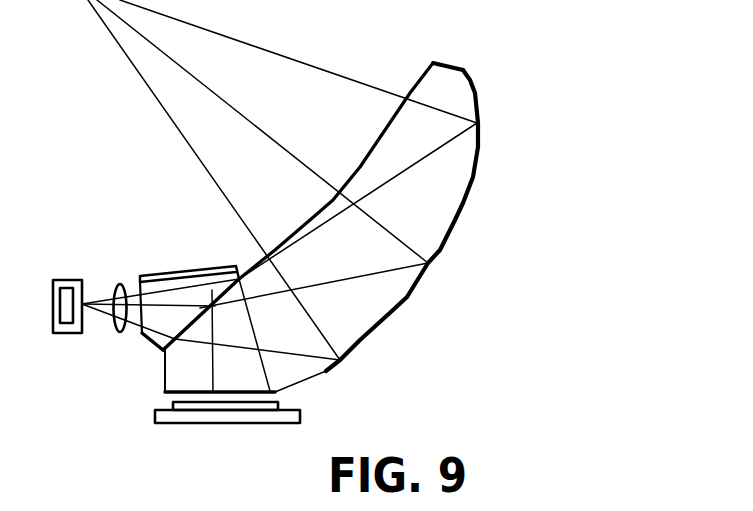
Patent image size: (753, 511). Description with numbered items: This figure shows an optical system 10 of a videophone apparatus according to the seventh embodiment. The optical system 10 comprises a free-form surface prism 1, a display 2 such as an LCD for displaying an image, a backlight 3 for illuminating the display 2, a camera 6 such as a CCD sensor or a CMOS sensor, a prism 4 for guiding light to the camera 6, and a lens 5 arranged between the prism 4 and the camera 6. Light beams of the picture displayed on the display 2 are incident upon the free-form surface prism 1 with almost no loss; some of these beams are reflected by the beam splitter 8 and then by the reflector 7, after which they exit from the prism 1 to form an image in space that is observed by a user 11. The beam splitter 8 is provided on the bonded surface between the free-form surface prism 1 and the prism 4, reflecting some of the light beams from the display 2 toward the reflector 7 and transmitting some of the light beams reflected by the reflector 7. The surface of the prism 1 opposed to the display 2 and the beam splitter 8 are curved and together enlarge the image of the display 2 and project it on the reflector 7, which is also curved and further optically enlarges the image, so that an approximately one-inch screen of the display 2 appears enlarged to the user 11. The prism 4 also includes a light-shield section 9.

The free-form surface prism 1 is at (369, 204).
The display 2 is at (278, 402).
The backlight 3 is at (299, 419).
The prism 4 is at (174, 309).
The lens 5 is at (118, 336).
The camera 6 is at (53, 333).
The reflector 7 is at (407, 297).
The beam splitter 8 is at (188, 337).
The light-shield section 9 is at (180, 272).
The optical system 10 is at (580, 107).
The user 11 is at (57, 0).